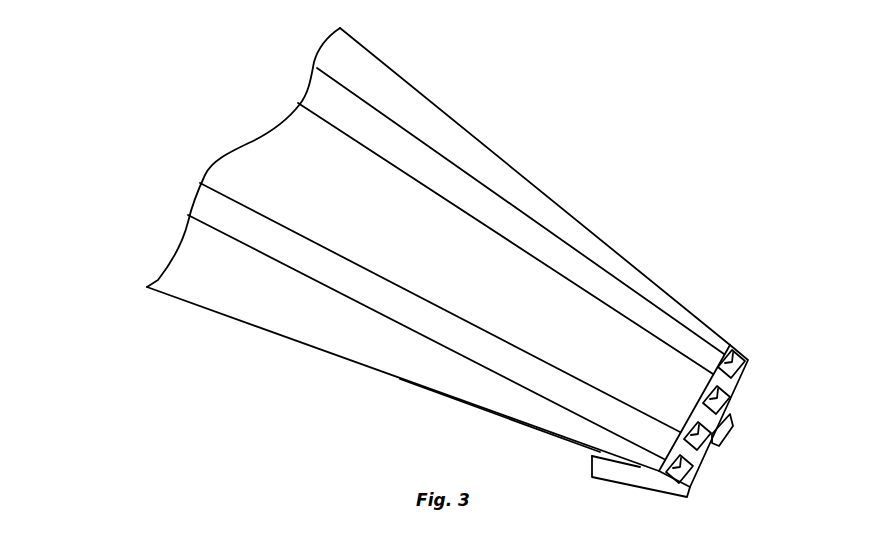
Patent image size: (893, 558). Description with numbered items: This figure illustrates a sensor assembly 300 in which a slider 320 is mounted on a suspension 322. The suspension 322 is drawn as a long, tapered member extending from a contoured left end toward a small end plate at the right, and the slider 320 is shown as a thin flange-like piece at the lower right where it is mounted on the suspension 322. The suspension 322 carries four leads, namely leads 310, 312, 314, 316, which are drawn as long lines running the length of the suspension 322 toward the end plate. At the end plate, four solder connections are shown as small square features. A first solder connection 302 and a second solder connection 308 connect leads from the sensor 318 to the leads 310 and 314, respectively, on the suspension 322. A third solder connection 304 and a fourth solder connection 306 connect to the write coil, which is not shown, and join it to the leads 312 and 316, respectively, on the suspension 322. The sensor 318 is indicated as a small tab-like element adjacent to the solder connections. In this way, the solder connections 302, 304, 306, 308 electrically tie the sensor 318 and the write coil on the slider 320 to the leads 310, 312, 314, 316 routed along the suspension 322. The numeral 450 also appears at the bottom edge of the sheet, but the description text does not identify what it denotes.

The sensor assembly 300 is at (295, 413).
The first solder connection 302 is at (677, 482).
The third solder connection 304 is at (703, 452).
The fourth solder connection 306 is at (732, 398).
The second solder connection 308 is at (748, 358).
The lead 310 is at (402, 318).
The lead 312 is at (541, 352).
The lead 314 is at (592, 267).
The lead 316 is at (645, 342).
The sensor 318 is at (727, 420).
The slider 320 is at (623, 475).
The suspension 322 is at (529, 426).
The base 450 is at (145, 553).